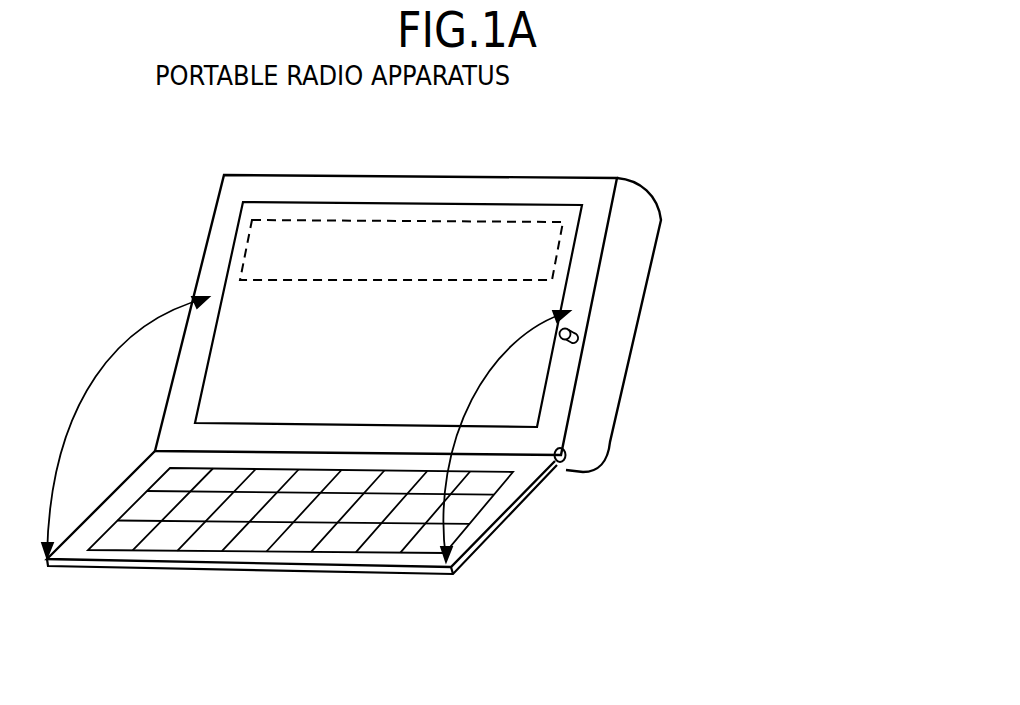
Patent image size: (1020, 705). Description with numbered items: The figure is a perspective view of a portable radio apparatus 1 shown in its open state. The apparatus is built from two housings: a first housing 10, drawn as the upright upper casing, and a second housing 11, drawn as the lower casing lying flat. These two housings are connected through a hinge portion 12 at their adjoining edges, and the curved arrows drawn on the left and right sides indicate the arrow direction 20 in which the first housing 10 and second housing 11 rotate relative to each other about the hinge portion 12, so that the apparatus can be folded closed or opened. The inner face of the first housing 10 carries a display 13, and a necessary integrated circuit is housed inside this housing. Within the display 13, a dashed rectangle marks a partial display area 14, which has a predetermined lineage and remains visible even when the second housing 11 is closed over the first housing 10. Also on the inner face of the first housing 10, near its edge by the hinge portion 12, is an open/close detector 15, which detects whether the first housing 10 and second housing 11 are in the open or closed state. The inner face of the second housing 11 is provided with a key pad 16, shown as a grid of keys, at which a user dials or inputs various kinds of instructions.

The portable radio apparatus 1 is at (240, 173).
The first housing 10 is at (222, 205).
The second housing 11 is at (77, 558).
The hinge portion 12 is at (562, 462).
The display 13 is at (457, 208).
The partial display area 14 is at (533, 252).
The open/close detector 15 is at (578, 338).
The key pad 16 is at (187, 528).
The arrow direction 20 is at (78, 395).